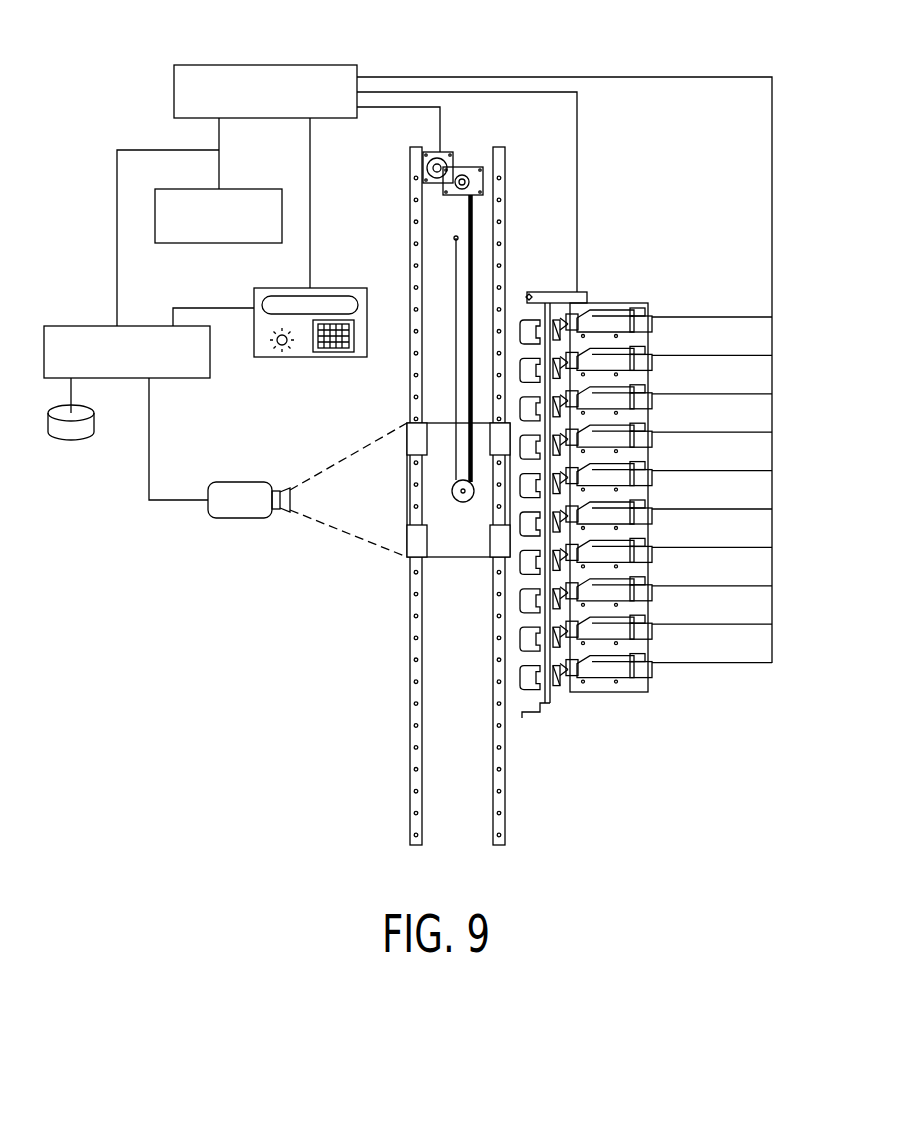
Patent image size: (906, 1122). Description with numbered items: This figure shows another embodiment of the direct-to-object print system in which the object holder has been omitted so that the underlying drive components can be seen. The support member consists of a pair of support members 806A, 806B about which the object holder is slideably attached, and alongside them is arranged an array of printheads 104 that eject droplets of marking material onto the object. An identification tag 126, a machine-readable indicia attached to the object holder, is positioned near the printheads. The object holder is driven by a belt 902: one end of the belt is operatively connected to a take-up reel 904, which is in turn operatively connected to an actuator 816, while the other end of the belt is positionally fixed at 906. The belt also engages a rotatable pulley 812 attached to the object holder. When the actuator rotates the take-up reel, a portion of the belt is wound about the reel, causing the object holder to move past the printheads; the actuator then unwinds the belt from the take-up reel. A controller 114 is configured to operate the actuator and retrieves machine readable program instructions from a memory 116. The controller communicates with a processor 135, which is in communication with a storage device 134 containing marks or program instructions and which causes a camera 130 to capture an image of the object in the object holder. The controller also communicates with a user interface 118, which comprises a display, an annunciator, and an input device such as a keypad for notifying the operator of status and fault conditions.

The controller 114 is at (268, 65).
The memory 116 is at (232, 189).
The processor 135 is at (86, 326).
The storage device 134 is at (68, 448).
The user interface 118 is at (310, 357).
The camera 130 is at (238, 482).
The array of printheads 104 is at (642, 294).
The identification tag 126 is at (582, 292).
The support member 806A is at (410, 800).
The support member 806B is at (505, 800).
The rotatable pulley 812 is at (452, 491).
The actuator 816 is at (447, 155).
The belt 902 is at (473, 245).
The take-up reel 904 is at (450, 197).
The fixed end 906 is at (440, 245).